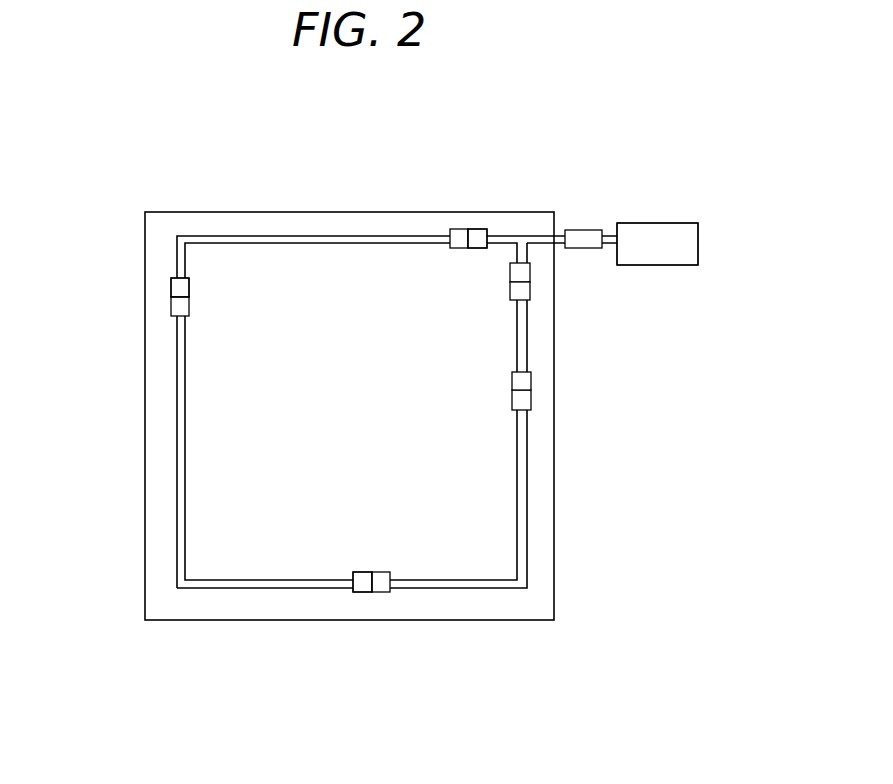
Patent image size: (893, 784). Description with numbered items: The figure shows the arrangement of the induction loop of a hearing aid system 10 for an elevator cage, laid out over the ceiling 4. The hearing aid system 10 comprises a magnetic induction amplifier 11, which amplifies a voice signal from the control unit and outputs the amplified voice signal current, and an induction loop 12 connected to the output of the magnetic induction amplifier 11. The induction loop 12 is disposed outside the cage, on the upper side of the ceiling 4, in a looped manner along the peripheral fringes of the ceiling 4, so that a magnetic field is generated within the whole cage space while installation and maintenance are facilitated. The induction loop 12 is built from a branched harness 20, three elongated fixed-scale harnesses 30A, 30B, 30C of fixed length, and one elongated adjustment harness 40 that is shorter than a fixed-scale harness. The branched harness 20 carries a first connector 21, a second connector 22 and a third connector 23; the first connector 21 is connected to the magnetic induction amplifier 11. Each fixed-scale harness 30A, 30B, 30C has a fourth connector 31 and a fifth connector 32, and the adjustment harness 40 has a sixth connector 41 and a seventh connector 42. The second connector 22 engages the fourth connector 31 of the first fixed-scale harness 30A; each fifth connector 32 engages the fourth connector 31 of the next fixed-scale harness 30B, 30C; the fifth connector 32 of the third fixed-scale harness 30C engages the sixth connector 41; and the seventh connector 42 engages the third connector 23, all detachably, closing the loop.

The ceiling 4 is at (160, 521).
The hearing aid system 10 is at (688, 216).
The magnetic induction amplifier 11 is at (650, 223).
The induction loop 12 is at (352, 213).
The branched harness 20 is at (533, 236).
The first connector 21 is at (583, 229).
The second connector 22 is at (482, 228).
The third connector 23 is at (530, 270).
The first fixed-scale harness 30A is at (320, 245).
The second fixed-scale harness 30B is at (187, 395).
The third fixed-scale harness 30C is at (516, 460).
The fourth connector 31 is at (170, 302).
The fifth connector 32 is at (170, 285).
The adjustment harness 40 is at (516, 336).
The sixth connector 41 is at (531, 378).
The seventh connector 42 is at (530, 290).